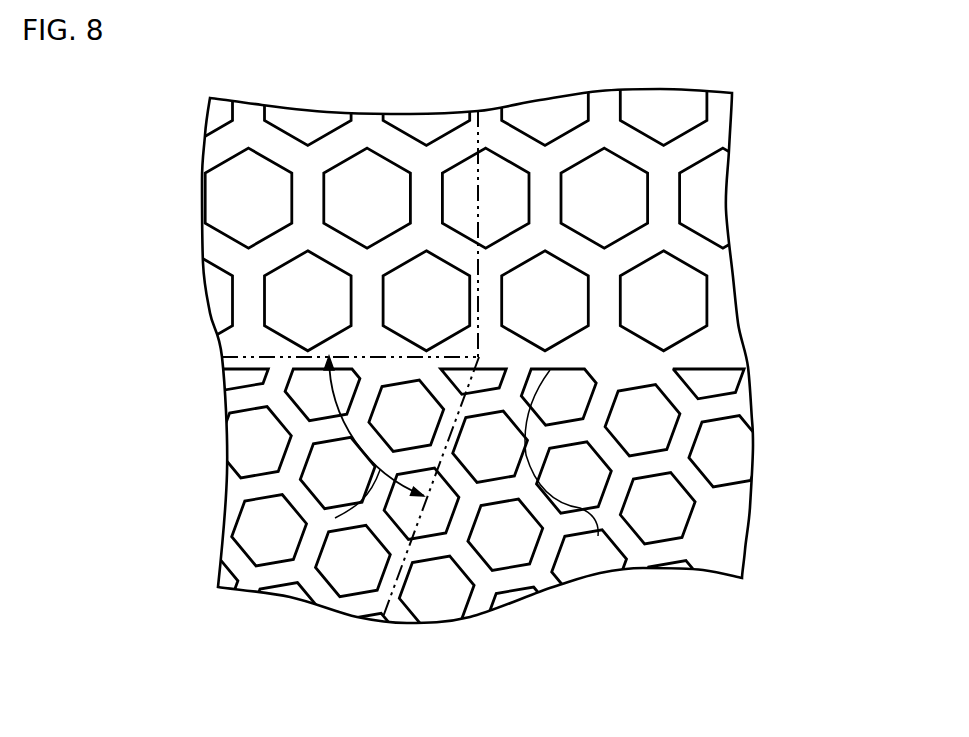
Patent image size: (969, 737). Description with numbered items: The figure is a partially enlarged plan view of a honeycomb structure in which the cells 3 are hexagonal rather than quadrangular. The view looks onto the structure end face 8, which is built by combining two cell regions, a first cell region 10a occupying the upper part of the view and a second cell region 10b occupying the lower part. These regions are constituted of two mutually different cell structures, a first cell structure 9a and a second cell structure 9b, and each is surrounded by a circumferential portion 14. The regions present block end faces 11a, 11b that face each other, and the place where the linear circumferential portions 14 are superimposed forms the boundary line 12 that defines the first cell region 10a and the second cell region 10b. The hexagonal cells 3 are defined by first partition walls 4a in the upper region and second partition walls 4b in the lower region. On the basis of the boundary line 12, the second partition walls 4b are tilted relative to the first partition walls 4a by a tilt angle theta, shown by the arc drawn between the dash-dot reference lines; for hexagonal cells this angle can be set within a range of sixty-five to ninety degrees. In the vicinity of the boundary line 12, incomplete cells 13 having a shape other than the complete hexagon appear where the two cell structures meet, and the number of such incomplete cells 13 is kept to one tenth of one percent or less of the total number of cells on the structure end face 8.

The cells 3 is at (527, 172).
The first partition walls 4a is at (688, 245).
The second partition walls 4b is at (690, 473).
The structure end face 8 is at (444, 367).
The first cell structure 9a is at (430, 197).
The second cell structure 9b is at (434, 529).
The first cell region 10a is at (157, 228).
The second cell region 10b is at (162, 472).
The block end face 11a is at (703, 148).
The block end face 11b is at (698, 560).
The boundary line 12 is at (705, 361).
The incomplete cells 13 is at (245, 370).
The circumferential portions 14 is at (547, 362).